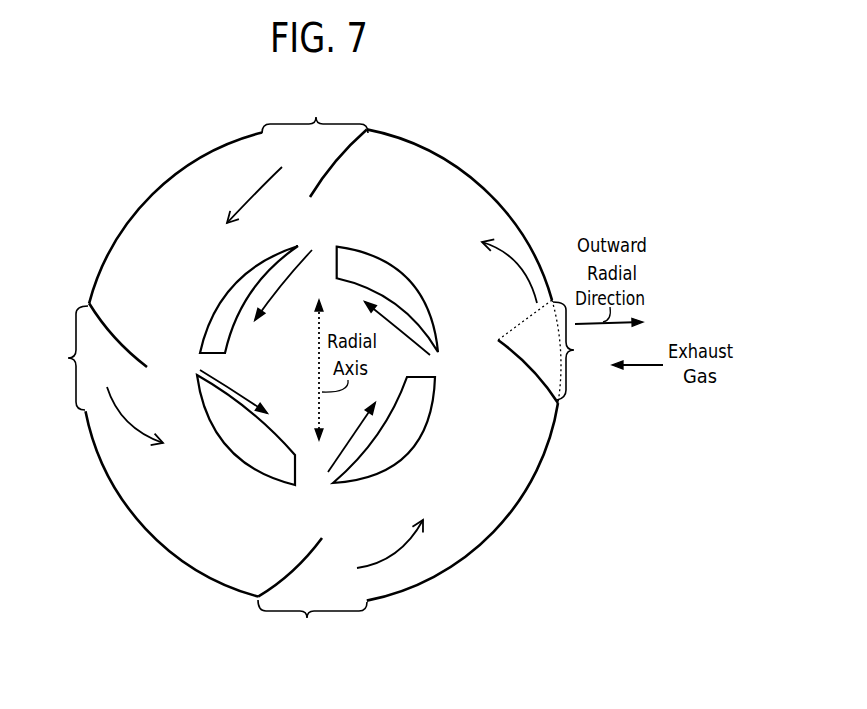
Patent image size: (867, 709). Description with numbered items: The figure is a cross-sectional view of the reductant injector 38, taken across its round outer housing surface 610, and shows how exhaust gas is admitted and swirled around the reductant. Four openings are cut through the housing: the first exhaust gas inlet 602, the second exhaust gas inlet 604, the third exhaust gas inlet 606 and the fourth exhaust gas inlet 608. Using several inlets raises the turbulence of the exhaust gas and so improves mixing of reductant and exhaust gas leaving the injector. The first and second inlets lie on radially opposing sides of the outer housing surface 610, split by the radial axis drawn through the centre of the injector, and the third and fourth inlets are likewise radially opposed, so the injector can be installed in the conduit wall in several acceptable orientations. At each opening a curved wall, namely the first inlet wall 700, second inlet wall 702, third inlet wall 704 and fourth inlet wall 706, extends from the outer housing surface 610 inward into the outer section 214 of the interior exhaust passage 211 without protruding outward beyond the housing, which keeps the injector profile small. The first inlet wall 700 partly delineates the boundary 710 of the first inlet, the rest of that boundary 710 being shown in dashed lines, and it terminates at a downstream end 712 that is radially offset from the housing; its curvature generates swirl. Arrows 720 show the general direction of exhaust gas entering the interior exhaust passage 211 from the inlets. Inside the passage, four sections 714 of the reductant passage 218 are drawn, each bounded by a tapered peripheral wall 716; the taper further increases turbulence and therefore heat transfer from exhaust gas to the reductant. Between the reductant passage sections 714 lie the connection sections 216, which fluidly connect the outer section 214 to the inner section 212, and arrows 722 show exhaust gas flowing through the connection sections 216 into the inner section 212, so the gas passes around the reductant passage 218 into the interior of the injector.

The reductant injector 38 is at (657, 146).
The interior exhaust passage 211 is at (536, 373).
The inner section 212 is at (295, 380).
The outer section 214 is at (487, 221).
The connection sections 216 is at (326, 369).
The reductant passage 218 is at (191, 213).
The first exhaust gas inlet 602 is at (579, 351).
The second exhaust gas inlet 604 is at (61, 358).
The third exhaust gas inlet 606 is at (315, 113).
The fourth exhaust gas inlet 608 is at (312, 623).
The outer housing surface 610 is at (558, 411).
The first inlet wall 700 is at (531, 368).
The second inlet wall 702 is at (112, 335).
The third inlet wall 704 is at (351, 145).
The fourth inlet wall 706 is at (288, 575).
The boundary 710 is at (540, 309).
The downstream end 712 is at (497, 341).
The reductant passage sections 714 is at (323, 376).
The peripheral wall 716 is at (236, 282).
The arrows 720 is at (257, 190).
The arrows 722 is at (289, 277).